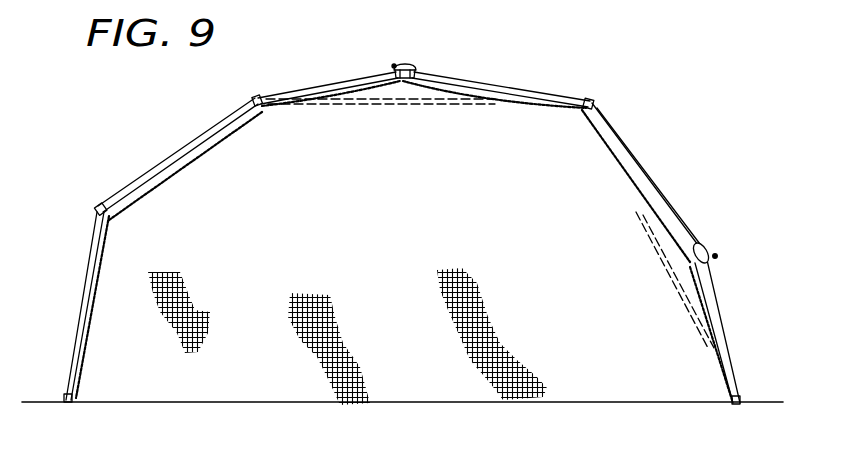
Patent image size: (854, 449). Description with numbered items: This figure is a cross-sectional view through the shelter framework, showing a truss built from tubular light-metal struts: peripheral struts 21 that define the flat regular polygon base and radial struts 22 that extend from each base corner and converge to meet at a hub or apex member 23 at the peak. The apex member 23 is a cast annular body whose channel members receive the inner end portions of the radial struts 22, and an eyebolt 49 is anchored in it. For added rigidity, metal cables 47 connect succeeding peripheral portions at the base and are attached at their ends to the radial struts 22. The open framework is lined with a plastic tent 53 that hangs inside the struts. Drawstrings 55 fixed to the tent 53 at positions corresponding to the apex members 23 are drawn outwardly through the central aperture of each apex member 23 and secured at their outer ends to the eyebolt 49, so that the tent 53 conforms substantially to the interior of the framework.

The peripheral struts 21 is at (257, 97).
The radial struts 22 is at (337, 67).
The hub or apex member 23 is at (417, 64).
The metal cables 47 is at (66, 396).
The eyebolts 49 is at (395, 64).
The plastic tent 53 is at (192, 171).
The drawstrings 55 is at (381, 99).